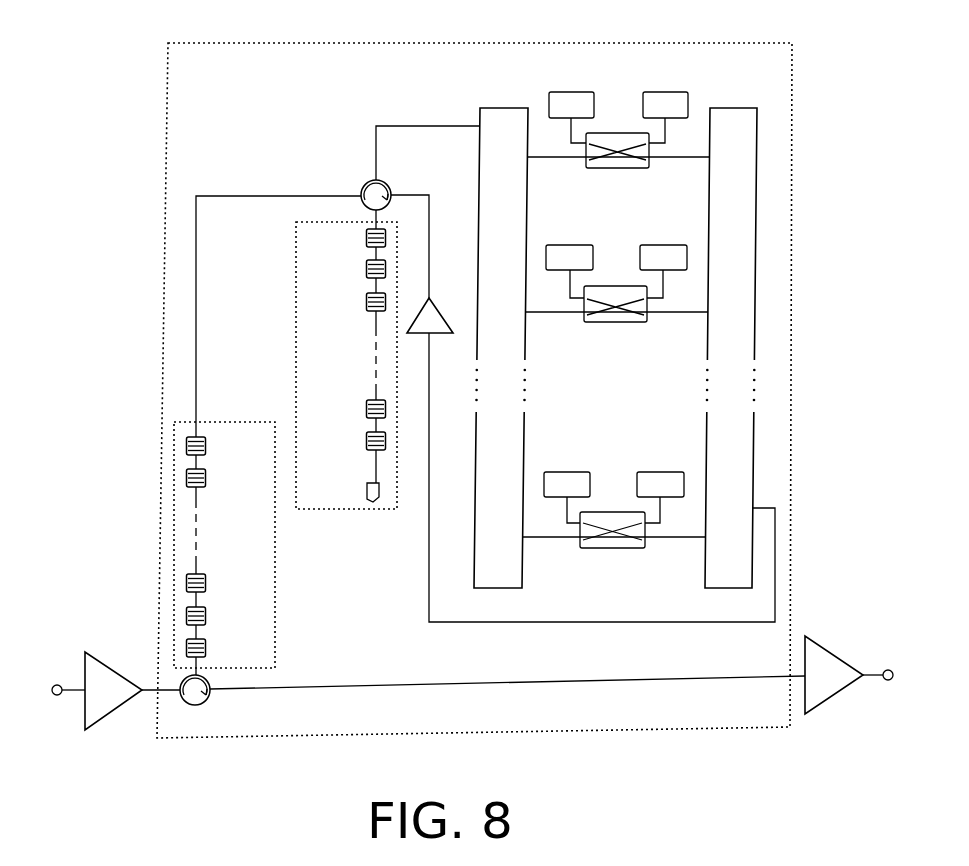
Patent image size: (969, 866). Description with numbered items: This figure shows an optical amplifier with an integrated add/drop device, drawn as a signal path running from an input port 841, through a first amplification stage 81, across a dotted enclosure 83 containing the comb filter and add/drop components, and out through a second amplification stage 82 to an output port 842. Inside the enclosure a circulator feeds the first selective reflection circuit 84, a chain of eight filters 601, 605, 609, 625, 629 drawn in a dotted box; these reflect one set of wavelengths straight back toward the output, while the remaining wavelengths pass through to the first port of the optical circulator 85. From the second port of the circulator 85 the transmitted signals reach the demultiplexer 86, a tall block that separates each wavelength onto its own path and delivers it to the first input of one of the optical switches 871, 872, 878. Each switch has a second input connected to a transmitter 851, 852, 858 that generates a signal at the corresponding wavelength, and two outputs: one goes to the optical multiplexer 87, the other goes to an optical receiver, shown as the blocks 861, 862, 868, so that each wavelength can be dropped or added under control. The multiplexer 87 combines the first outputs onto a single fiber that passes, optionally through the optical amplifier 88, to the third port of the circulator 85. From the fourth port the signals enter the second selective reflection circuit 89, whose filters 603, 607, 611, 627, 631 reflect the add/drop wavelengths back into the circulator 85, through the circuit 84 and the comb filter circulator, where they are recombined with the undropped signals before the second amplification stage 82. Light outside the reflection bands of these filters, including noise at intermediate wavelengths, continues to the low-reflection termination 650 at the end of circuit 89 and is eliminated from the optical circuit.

The node enclosure (dotted boundary) 83 is at (157, 385).
The first selective reflection circuit 84 is at (278, 608).
The second selective reflection circuit 89 is at (292, 352).
The optical circulator 85 is at (360, 182).
The amplification stage 81 is at (118, 722).
The amplification stage 82 is at (836, 705).
The input port 841 is at (55, 683).
The output port 842 is at (882, 663).
The optical amplifier 88 is at (447, 310).
The demultiplexer 86 is at (502, 100).
The optical multiplexer 87 is at (730, 100).
The transmitter 851 is at (569, 85).
The transmitter 861 is at (664, 85).
The optical switch 871 is at (616, 176).
The transmitter 852 is at (567, 239).
The transmitter 862 is at (662, 239).
The optical switch 872 is at (614, 330).
The transmitter 858 is at (564, 465).
The transmitter 868 is at (659, 465).
The optical switch 878 is at (610, 556).
The filter 603 is at (365, 239).
The filter 607 is at (365, 270).
The filter 611 is at (365, 302).
The filter 627 is at (365, 409).
The filter 631 is at (365, 441).
The low-reflection termination 650 is at (365, 493).
The filter 629 is at (208, 446).
The filter 625 is at (208, 480).
The filter 609 is at (206, 584).
The filter 605 is at (206, 616).
The filter 601 is at (206, 648).